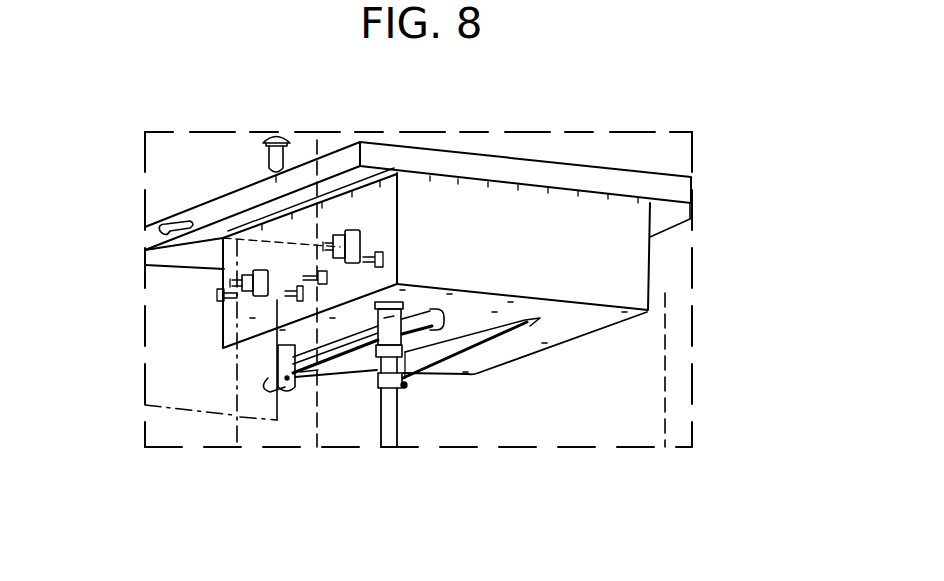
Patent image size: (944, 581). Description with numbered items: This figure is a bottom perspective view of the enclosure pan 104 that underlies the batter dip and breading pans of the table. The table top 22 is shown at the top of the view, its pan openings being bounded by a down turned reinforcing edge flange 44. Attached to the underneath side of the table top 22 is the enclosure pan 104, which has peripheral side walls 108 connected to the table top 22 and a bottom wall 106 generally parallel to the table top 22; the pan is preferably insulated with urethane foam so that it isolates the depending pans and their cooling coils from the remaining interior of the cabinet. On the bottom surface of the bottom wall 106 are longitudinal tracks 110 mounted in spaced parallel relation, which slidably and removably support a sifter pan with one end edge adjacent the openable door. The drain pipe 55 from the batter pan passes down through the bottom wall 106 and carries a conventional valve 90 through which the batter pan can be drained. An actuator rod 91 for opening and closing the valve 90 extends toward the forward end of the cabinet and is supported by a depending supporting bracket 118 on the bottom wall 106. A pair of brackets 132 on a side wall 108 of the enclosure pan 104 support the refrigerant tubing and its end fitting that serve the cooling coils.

The table top 22 is at (567, 167).
The down turned reinforcing edge flange 44 is at (667, 190).
The enclosure pan 104 is at (651, 253).
The peripheral side walls 108 is at (623, 278).
The bottom wall 106 is at (607, 318).
The longitudinal tracks 110 is at (441, 324).
The valve 90 is at (390, 328).
The drain pipe 55 is at (387, 412).
The supporting bracket 118 is at (292, 385).
The actuator rod 91 is at (308, 372).
The brackets 132 is at (257, 290).